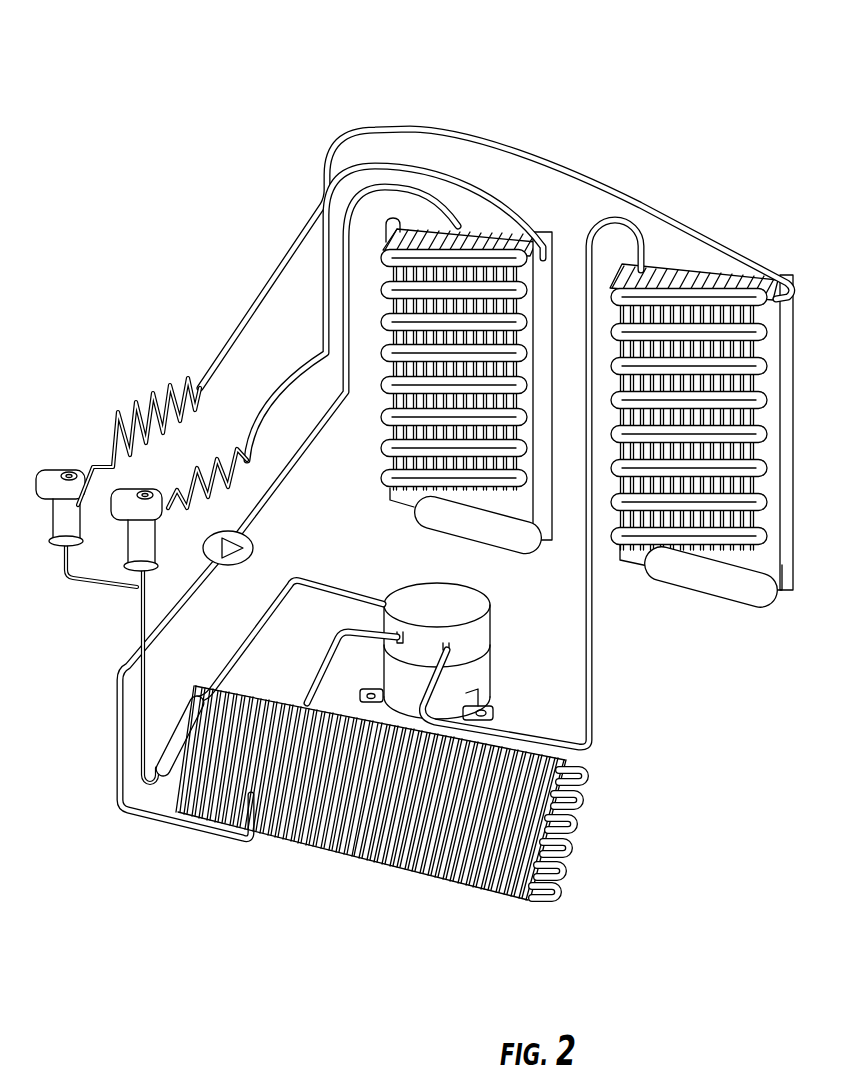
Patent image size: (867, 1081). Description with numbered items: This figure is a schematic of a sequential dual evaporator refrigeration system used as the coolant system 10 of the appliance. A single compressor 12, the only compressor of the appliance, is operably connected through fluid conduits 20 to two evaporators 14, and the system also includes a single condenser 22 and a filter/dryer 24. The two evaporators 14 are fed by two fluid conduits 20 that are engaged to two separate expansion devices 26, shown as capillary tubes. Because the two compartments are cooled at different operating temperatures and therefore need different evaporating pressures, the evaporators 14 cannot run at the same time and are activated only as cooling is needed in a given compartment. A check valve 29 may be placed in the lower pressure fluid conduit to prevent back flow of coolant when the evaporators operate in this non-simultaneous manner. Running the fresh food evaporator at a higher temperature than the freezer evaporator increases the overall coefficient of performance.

The coolant system 10 is at (643, 80).
The compressor 12 is at (418, 692).
The evaporator 14 is at (453, 230).
The fluid conduits 20 is at (248, 323).
The condenser 22 is at (421, 888).
The filter/dryer 24 is at (188, 718).
The expansion devices 26 is at (131, 424).
The check valve 29 is at (205, 546).